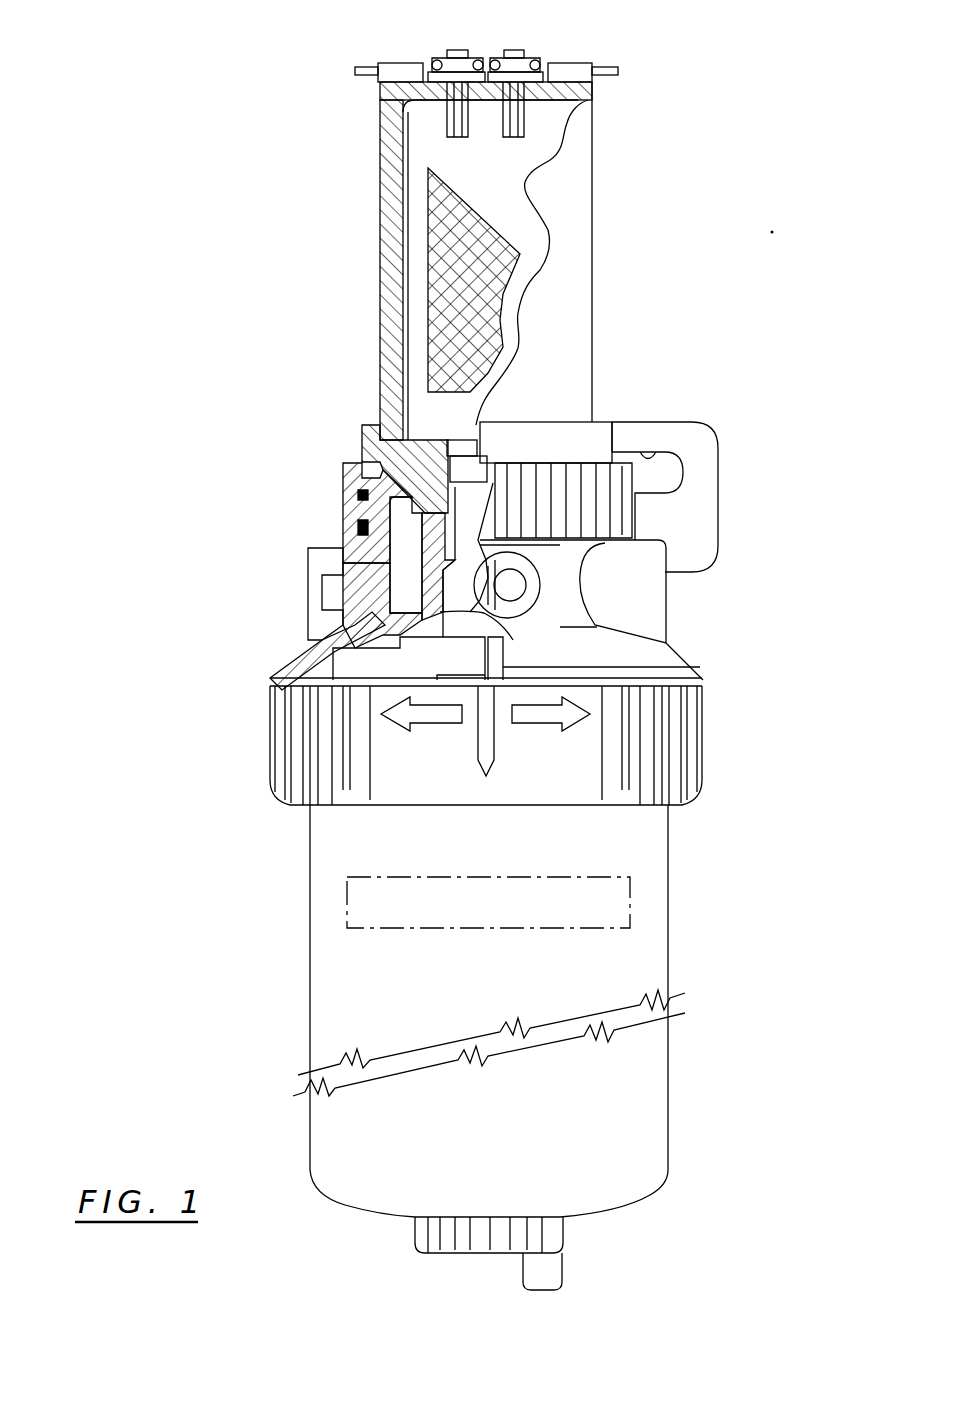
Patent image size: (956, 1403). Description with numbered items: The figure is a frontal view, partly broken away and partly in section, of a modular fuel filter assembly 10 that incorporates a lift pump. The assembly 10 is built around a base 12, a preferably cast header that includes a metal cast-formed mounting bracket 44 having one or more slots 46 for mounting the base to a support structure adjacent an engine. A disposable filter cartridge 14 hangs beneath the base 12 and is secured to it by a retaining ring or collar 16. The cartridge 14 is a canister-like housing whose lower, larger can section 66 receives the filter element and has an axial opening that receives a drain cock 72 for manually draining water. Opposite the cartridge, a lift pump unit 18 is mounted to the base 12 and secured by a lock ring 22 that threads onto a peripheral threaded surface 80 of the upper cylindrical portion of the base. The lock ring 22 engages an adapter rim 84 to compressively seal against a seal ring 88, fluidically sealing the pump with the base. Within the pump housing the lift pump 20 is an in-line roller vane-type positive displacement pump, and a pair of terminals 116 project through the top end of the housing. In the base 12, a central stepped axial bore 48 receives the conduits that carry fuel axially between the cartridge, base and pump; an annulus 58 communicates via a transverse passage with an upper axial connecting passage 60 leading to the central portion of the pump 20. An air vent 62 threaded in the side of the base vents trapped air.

The modular fuel filter assembly 10 is at (202, 690).
The base 12 is at (655, 612).
The disposable filter cartridge 14 is at (665, 888).
The retaining ring 16 is at (275, 765).
The lift pump unit 18 is at (634, 192).
The lift pump 20 is at (381, 215).
The lock ring 22 is at (612, 508).
The mounting bracket 44 is at (718, 473).
The slot 46 is at (648, 455).
The central stepped axial bore 48 is at (513, 635).
The annulus 58 is at (405, 578).
The upper axial connecting passage 60 is at (465, 460).
The air vent 62 is at (510, 575).
The lower can section 66 is at (665, 1150).
The drain cock 72 is at (550, 1232).
The peripheral threaded surface 80 is at (358, 497).
The adapter rim 84 is at (430, 458).
The seal ring 88 is at (358, 535).
The terminals 116 is at (452, 50).